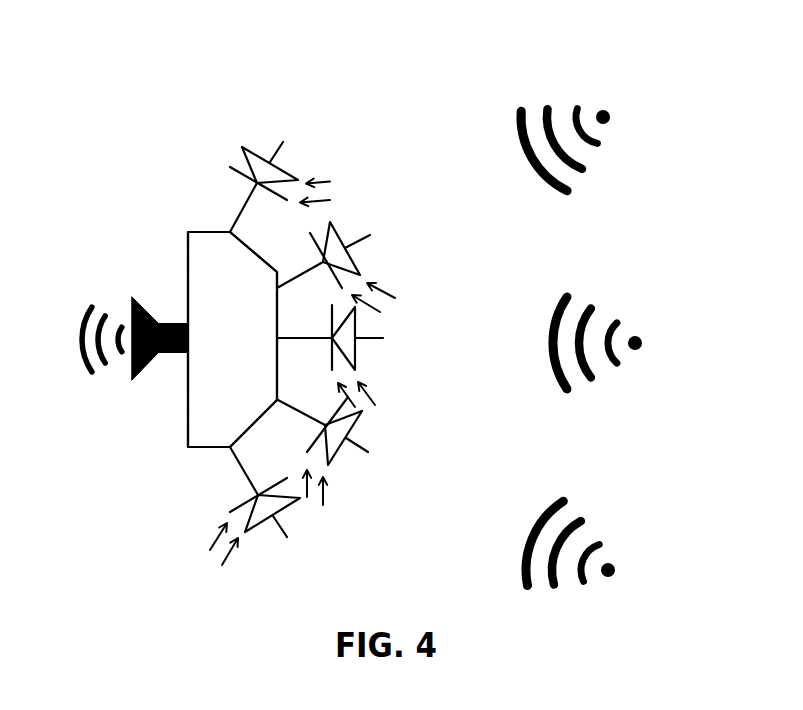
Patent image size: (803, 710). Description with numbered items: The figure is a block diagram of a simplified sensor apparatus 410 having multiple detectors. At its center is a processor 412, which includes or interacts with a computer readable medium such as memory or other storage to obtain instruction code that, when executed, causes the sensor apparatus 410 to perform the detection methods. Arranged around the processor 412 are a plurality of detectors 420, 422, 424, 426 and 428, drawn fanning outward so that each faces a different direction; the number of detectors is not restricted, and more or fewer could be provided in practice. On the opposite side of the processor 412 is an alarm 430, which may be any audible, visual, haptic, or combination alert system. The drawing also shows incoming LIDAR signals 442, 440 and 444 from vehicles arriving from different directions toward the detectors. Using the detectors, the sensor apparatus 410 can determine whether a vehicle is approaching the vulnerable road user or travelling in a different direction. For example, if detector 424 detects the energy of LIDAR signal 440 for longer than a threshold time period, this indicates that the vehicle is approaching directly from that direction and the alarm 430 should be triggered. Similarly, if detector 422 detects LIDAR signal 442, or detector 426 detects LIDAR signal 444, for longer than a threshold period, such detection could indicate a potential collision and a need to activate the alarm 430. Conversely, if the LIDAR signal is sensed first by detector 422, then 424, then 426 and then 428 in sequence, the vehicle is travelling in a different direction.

The sensor apparatus 410 is at (181, 177).
The processor 412 is at (248, 400).
The detector 420 is at (258, 154).
The detector 422 is at (337, 232).
The detector 424 is at (355, 347).
The detector 426 is at (355, 423).
The detector 428 is at (280, 513).
The alarm 430 is at (178, 354).
The LIDAR signal 440 is at (642, 340).
The LIDAR signal 442 is at (610, 112).
The LIDAR signal 444 is at (616, 565).